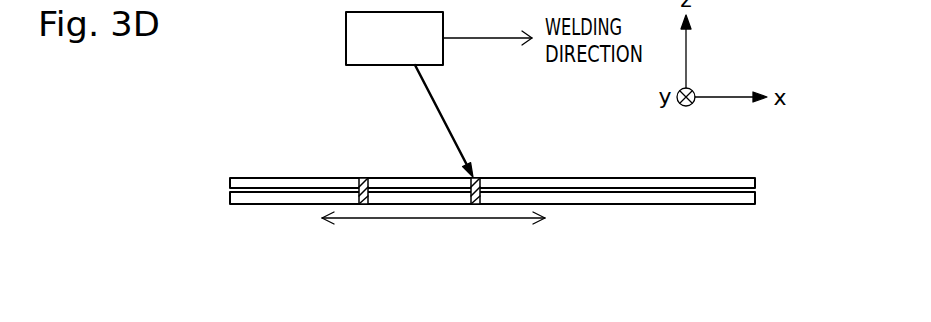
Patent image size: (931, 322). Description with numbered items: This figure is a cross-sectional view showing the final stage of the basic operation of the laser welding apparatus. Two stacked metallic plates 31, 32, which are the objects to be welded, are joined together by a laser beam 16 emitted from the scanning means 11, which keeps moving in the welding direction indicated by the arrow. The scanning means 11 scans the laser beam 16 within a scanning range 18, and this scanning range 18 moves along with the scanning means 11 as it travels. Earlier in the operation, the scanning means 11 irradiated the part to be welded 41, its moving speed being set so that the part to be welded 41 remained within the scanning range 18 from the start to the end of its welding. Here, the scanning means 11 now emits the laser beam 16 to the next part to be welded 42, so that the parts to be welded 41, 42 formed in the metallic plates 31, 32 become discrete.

The scanning means 11 is at (383, 52).
The laser beam 16 is at (437, 105).
The scanning range 18 is at (350, 222).
The metallic plate 31 is at (757, 183).
The metallic plate 32 is at (757, 198).
The part to be welded 41 is at (358, 177).
The part to be welded 42 is at (480, 177).